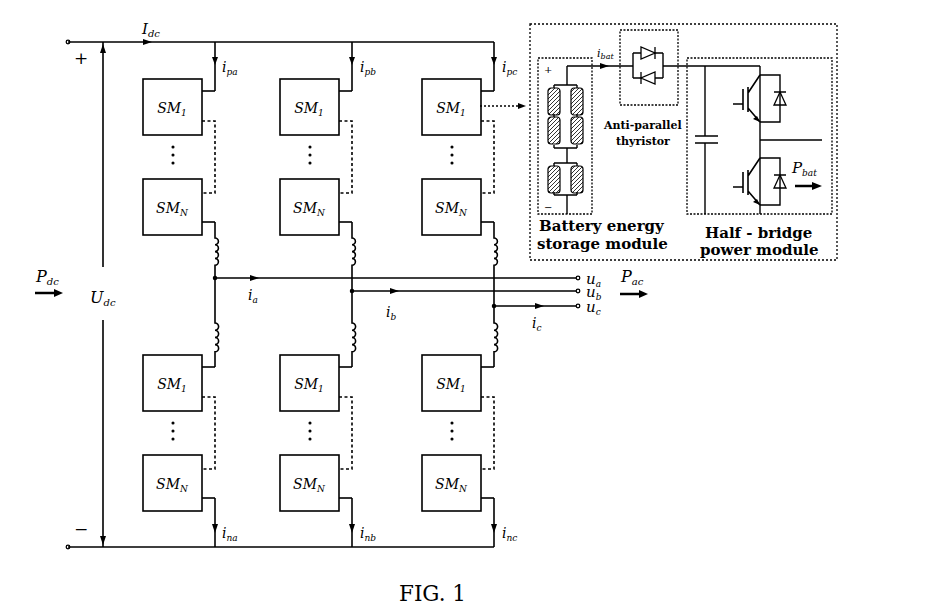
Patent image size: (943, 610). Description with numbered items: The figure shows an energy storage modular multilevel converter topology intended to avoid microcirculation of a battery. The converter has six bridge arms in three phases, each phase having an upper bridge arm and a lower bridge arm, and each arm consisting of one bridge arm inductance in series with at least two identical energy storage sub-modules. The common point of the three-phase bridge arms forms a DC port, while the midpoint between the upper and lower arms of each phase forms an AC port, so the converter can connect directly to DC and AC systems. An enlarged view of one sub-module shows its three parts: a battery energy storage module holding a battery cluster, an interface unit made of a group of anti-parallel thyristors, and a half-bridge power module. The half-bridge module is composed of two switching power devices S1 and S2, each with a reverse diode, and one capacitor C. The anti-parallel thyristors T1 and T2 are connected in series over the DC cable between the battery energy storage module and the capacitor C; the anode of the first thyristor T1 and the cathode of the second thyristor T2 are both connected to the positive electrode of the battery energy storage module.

The first thyristor T1 is at (660, 43).
The second thyristor T2 is at (642, 81).
The capacitor C is at (712, 140).
The first switching power device S1 is at (753, 98).
The second switching power device S2 is at (753, 181).